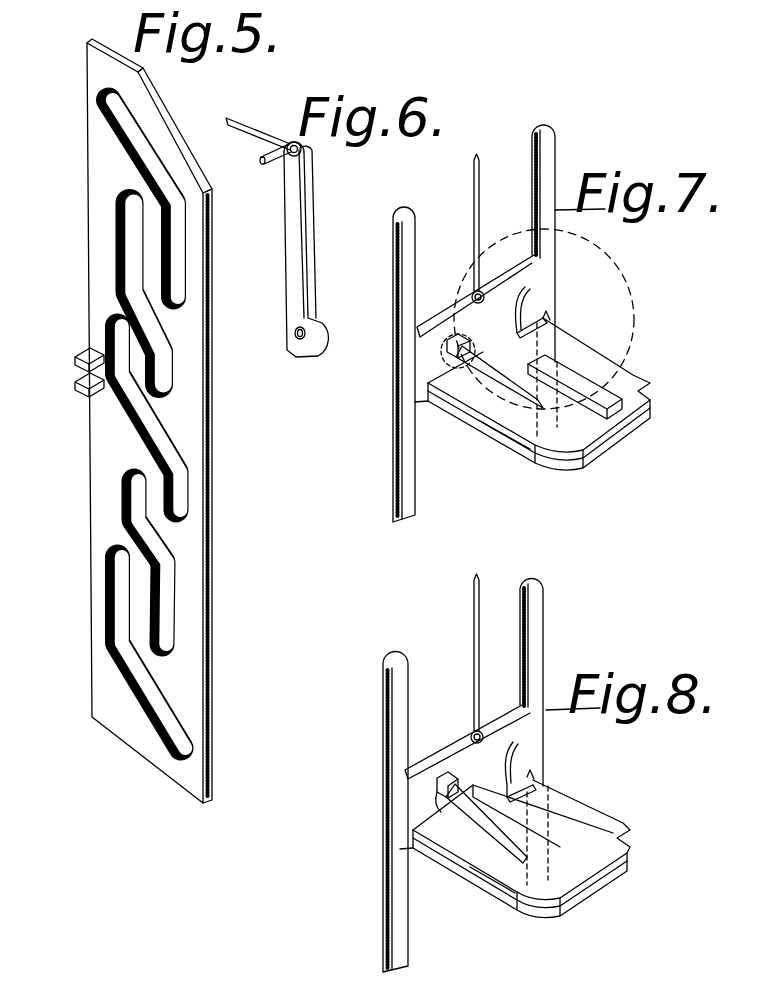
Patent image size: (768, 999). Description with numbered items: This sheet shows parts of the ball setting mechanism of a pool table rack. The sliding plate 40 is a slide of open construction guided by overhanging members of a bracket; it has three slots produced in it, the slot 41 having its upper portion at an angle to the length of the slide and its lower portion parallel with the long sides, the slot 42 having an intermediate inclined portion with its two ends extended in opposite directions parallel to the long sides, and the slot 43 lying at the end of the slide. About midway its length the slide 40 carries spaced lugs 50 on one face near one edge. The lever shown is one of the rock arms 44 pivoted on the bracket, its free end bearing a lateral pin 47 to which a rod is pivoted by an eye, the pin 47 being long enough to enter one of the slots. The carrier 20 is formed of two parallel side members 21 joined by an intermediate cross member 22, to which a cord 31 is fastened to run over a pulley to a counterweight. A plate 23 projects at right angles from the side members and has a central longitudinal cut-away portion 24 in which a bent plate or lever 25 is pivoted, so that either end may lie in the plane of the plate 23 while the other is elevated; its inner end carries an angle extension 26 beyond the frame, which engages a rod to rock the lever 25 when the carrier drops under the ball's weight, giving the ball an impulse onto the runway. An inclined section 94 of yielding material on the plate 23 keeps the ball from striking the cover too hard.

In FIG. 7, the carrier 20 is at (392, 415).
In FIG. 8, the carrier 20 is at (394, 912).
In FIG. 7, the side members 21 is at (405, 290).
In FIG. 8, the side members 21 is at (393, 738).
In FIG. 7, the cross member 22 is at (513, 279).
In FIG. 8, the cross member 22 is at (437, 770).
In FIG. 7, the plate 23 is at (580, 355).
In FIG. 8, the plate 23 is at (580, 833).
In FIG. 7, the cut-away portion 24 is at (567, 424).
In FIG. 8, the cut-away portion 24 is at (428, 853).
In FIG. 7, the bent plate 25 is at (503, 368).
In FIG. 8, the bent plate 25 is at (514, 820).
In FIG. 7, the angle extension 26 is at (447, 342).
In FIG. 8, the angle extension 26 is at (445, 797).
In FIG. 7, the cord 31 is at (465, 205).
In FIG. 5, the sliding plate 40 is at (195, 577).
In FIG. 5, the slot 41 is at (177, 273).
In FIG. 5, the slot 42 is at (160, 435).
In FIG. 5, the slot 43 is at (145, 688).
In FIG. 6, the arm 44 is at (298, 195).
In FIG. 6, the lateral pin 47 is at (263, 167).
In FIG. 5, the spaced lugs 50 is at (75, 384).
In FIG. 7, the inclined section 94 is at (530, 430).
In FIG. 8, the inclined section 94 is at (507, 873).